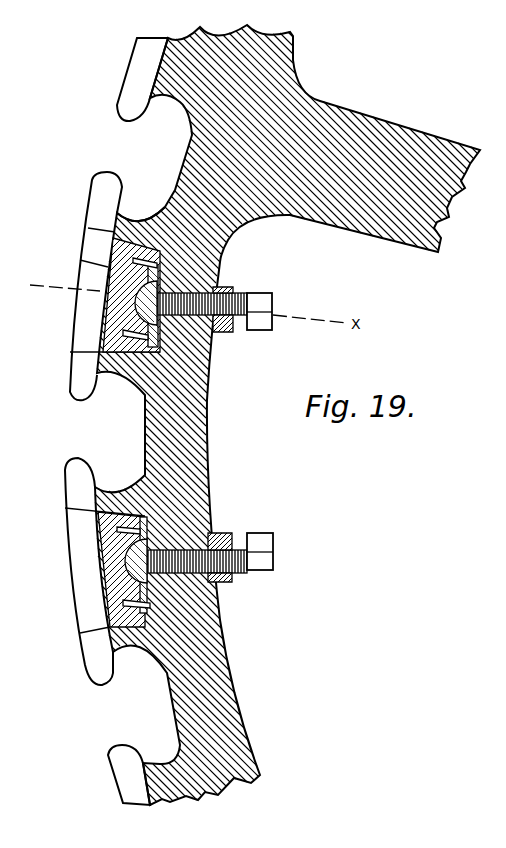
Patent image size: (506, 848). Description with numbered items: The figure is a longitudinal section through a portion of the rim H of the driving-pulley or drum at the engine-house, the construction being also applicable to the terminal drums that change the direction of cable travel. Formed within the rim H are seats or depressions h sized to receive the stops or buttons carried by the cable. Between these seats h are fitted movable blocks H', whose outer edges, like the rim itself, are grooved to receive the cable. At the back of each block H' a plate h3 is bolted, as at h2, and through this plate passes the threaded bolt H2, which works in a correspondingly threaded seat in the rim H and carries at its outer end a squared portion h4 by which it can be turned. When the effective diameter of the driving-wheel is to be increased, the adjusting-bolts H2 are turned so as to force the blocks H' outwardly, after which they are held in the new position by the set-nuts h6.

The rim of the drum H is at (287, 415).
The movable block H' is at (92, 428).
The threaded bolt H2 is at (233, 323).
The seat or depression h is at (110, 432).
The bolt fastening h2 is at (160, 263).
The plate h3 is at (157, 218).
The squared portion h4 is at (273, 338).
The set-nut h6 is at (220, 333).